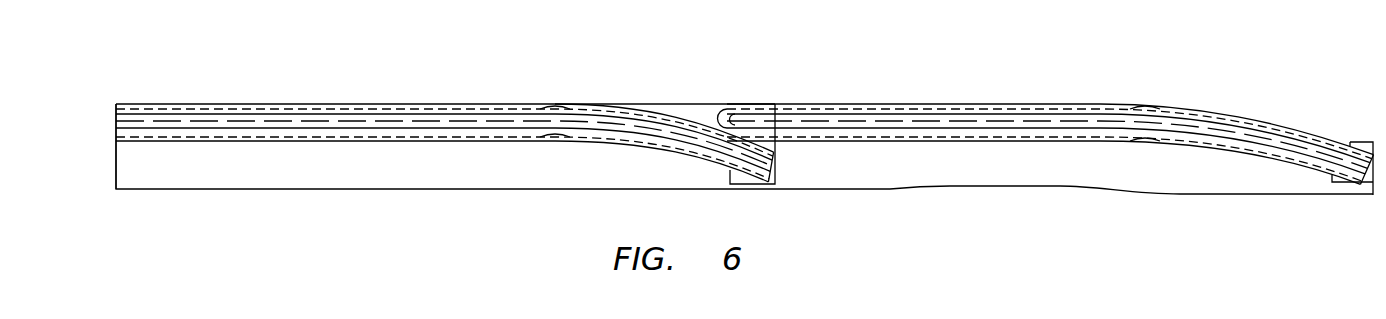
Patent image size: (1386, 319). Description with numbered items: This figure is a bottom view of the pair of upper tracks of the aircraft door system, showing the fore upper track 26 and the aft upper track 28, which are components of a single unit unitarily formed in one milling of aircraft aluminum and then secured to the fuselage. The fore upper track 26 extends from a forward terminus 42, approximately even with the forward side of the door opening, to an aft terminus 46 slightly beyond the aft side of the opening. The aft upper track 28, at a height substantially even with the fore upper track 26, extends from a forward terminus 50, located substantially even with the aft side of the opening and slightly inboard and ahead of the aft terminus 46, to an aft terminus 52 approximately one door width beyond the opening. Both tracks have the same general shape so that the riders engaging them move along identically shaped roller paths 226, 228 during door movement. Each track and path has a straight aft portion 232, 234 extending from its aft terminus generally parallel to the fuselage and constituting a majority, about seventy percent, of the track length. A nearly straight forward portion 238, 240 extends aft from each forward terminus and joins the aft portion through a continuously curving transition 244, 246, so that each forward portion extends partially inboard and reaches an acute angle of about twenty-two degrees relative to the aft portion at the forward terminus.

The fore upper track 26 is at (1036, 137).
The aft upper track 28 is at (445, 131).
The forward terminus of fore upper track 42 is at (1355, 192).
The aft terminus of fore upper track 46 is at (720, 100).
The forward terminus of aft upper track 50 is at (778, 178).
The aft terminus of aft upper track 52 is at (112, 120).
The roller path of fore upper track 226 is at (1095, 123).
The roller path of aft upper track 228 is at (380, 123).
The aft portion of fore upper track 232 is at (841, 122).
The aft portion of aft upper track 234 is at (271, 124).
The forward portion of fore upper track 238 is at (1306, 153).
The forward portion of aft upper track 240 is at (720, 153).
The curving transition of fore upper track 244 is at (1218, 127).
The curving transition of aft upper track 246 is at (621, 122).